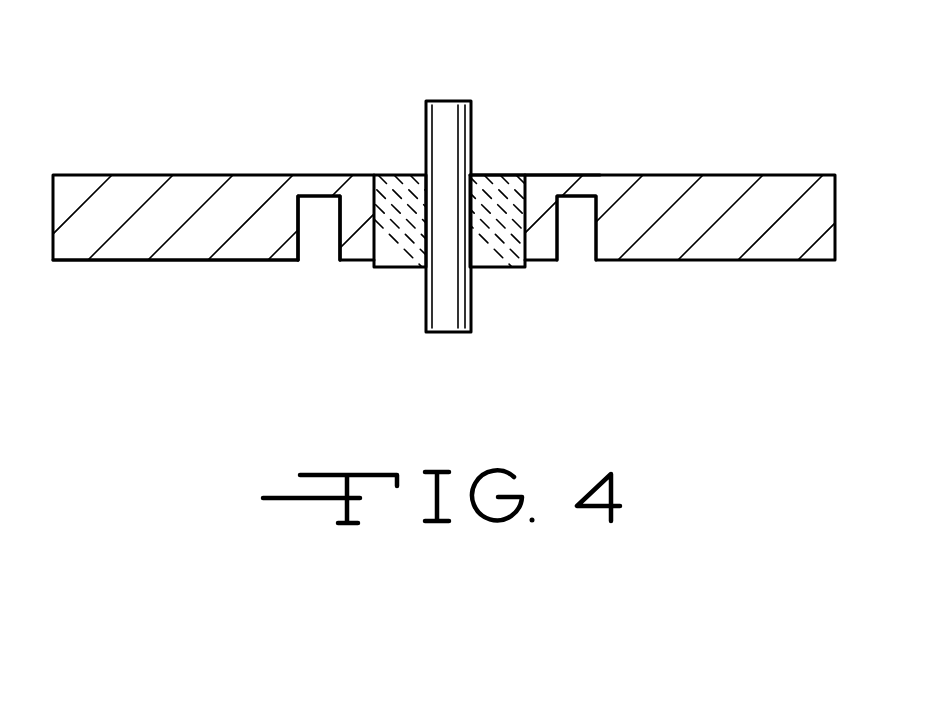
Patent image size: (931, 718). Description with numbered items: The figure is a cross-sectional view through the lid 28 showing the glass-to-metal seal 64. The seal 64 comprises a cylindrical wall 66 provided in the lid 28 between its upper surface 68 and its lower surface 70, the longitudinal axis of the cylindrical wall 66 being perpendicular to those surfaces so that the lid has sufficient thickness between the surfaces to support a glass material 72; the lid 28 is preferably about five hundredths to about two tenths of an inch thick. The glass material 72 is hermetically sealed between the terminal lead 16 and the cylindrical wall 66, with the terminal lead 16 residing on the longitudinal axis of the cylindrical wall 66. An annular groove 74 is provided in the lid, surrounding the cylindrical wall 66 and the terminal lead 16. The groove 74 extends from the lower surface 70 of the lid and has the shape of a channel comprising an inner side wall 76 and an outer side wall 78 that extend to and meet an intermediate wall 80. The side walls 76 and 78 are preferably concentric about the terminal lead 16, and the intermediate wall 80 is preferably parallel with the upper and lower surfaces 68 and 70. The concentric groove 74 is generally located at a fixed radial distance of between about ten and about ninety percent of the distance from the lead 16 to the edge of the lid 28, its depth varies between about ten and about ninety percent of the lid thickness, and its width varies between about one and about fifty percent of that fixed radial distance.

The terminal lead 16 is at (460, 106).
The lid 28 is at (752, 176).
The glass-to-metal seal 64 is at (523, 164).
The cylindrical wall 66 is at (513, 237).
The upper surface 68 is at (188, 163).
The lower surface 70 is at (197, 274).
The glass material 72 is at (403, 269).
The annular groove 74 is at (576, 272).
The inner side wall 76 is at (337, 220).
The outer side wall 78 is at (298, 237).
The intermediate wall 80 is at (318, 196).